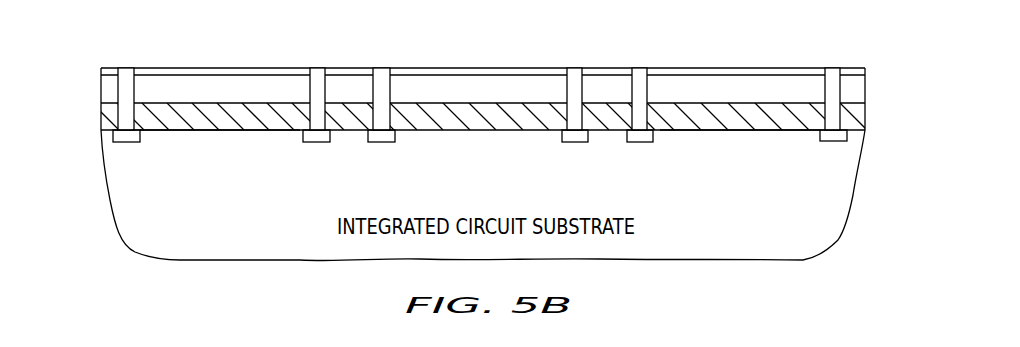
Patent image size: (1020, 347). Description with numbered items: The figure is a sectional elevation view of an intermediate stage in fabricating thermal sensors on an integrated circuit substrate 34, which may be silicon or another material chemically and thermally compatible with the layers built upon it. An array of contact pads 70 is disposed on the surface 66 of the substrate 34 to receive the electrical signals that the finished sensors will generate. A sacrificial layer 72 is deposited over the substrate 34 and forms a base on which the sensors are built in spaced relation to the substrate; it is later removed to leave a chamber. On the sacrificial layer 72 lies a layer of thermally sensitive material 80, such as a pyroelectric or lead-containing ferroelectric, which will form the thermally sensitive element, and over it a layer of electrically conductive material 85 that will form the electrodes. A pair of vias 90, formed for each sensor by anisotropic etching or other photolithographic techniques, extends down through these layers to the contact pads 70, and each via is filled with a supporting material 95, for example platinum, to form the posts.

The integrated circuit substrate 34 is at (808, 250).
The surface 66 is at (225, 139).
The contact pads 70 is at (317, 143).
The sacrificial layer 72 is at (868, 115).
The layer of thermally sensitive material 80 is at (867, 85).
The layer of electrically conductive material 85 is at (100, 68).
The vias 90 is at (135, 78).
The supporting material 95 is at (127, 70).